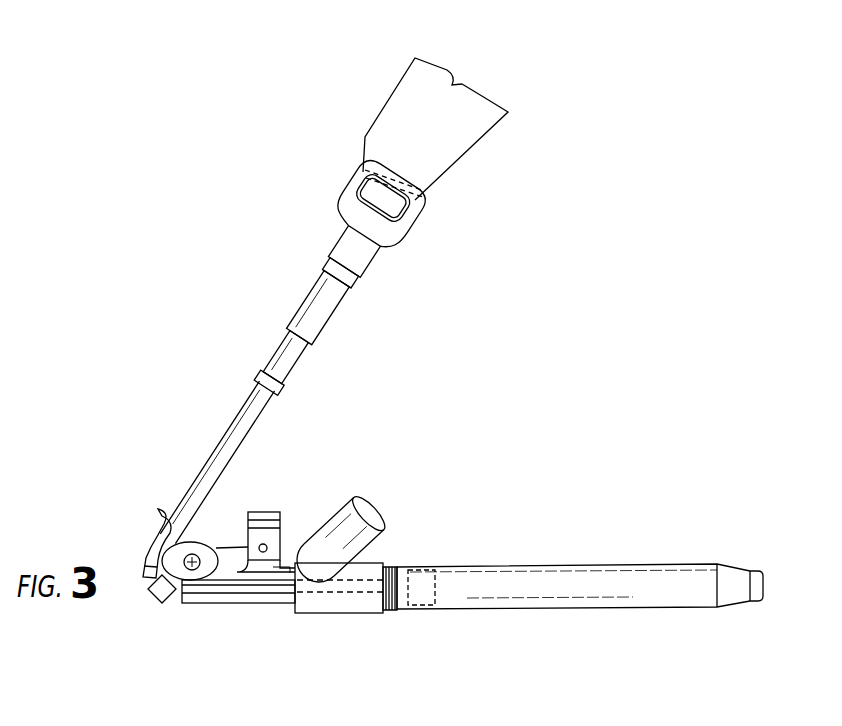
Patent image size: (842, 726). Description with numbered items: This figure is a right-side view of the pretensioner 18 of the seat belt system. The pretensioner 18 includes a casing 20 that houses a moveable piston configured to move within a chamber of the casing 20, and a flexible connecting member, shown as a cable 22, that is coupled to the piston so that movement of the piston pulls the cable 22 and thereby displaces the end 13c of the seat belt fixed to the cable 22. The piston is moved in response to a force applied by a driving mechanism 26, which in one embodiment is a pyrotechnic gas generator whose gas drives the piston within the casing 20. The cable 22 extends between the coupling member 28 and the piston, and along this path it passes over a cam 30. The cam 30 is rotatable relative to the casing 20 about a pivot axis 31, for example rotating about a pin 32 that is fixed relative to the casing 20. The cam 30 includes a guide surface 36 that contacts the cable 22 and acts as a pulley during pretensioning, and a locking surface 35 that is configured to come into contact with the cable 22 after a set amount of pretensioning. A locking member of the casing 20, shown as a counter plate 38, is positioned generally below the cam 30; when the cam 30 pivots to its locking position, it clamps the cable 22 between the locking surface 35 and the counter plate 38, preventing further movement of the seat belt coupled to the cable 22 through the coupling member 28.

The pretensioner 18 is at (105, 198).
The end of the seat belt 13c is at (452, 148).
The coupling member 28 is at (407, 232).
The cable 22 is at (228, 437).
The driving mechanism 26 is at (377, 513).
The casing 20 is at (513, 565).
The cam 30 is at (208, 553).
The pin 32 is at (181, 560).
The guide surface 36 is at (161, 582).
The pivot axis 31 is at (192, 569).
The locking surface 35 is at (214, 574).
The counter plate 38 is at (205, 598).